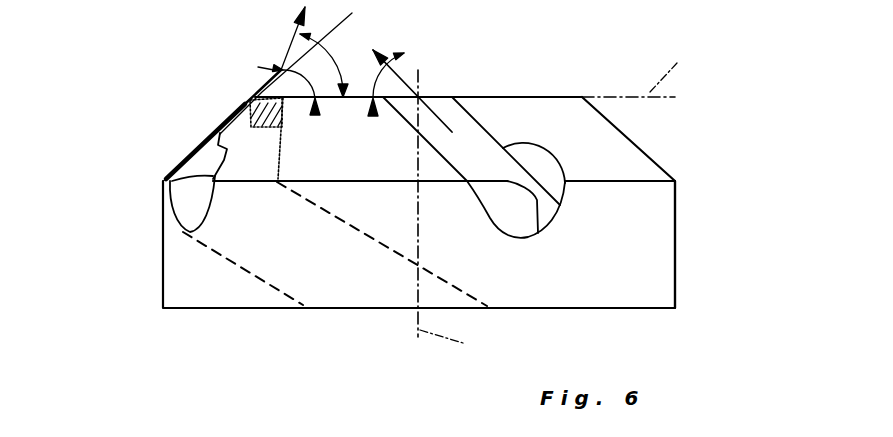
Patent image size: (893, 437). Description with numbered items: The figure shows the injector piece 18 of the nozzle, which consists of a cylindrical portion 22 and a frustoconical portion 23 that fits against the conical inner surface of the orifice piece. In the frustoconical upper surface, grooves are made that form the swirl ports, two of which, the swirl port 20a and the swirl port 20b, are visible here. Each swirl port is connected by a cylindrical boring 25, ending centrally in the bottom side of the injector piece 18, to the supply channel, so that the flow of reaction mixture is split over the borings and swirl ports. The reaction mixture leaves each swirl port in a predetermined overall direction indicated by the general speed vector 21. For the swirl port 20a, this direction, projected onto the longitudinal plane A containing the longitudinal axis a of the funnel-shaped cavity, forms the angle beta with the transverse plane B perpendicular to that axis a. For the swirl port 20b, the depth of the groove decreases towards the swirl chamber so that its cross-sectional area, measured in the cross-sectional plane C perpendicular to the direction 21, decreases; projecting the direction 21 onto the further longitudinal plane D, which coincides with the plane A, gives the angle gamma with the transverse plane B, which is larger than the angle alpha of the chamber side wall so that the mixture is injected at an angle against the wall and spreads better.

The injector piece 18 is at (214, 321).
The swirl port 20a is at (462, 140).
The swirl port 20b is at (218, 134).
The general speed vector 21 is at (289, 48).
The cylindrical portion 22 is at (675, 253).
The frustoconical portion 23 is at (637, 145).
The cylindrical boring 25 is at (317, 257).
The longitudinal plane A is at (626, 83).
The transverse plane B is at (673, 73).
The cross-sectional plane C is at (245, 123).
The further longitudinal plane D is at (143, 73).
The longitudinal axis a is at (450, 212).